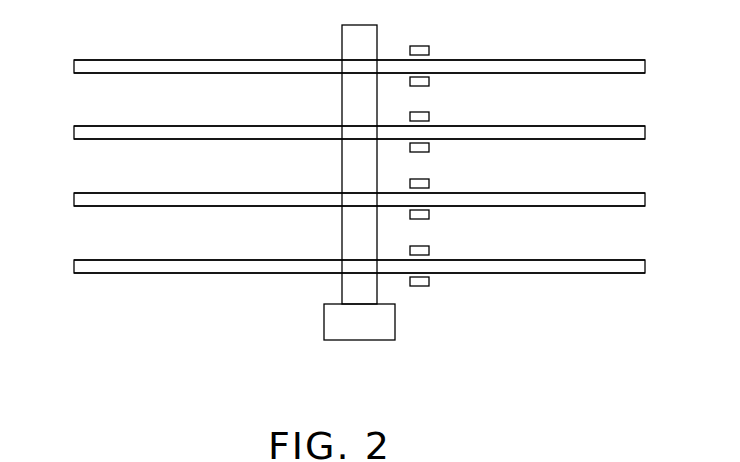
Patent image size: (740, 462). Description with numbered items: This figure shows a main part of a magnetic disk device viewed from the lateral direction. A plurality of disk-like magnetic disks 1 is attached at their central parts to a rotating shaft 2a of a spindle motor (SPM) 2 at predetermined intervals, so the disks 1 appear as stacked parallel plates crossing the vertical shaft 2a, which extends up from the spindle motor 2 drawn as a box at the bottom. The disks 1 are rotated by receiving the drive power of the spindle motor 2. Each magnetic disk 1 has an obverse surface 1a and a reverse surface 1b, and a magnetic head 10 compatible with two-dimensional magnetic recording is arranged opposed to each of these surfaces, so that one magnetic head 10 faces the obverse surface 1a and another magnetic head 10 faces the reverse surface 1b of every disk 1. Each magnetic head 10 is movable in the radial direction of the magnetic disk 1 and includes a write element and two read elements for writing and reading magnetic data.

The magnetic disk 1 is at (90, 60).
The obverse surface 1a is at (628, 59).
The reverse surface 1b is at (628, 74).
The spindle motor (SPM) 2 is at (324, 321).
The rotating shaft 2a is at (342, 34).
The magnetic head 10 is at (429, 48).